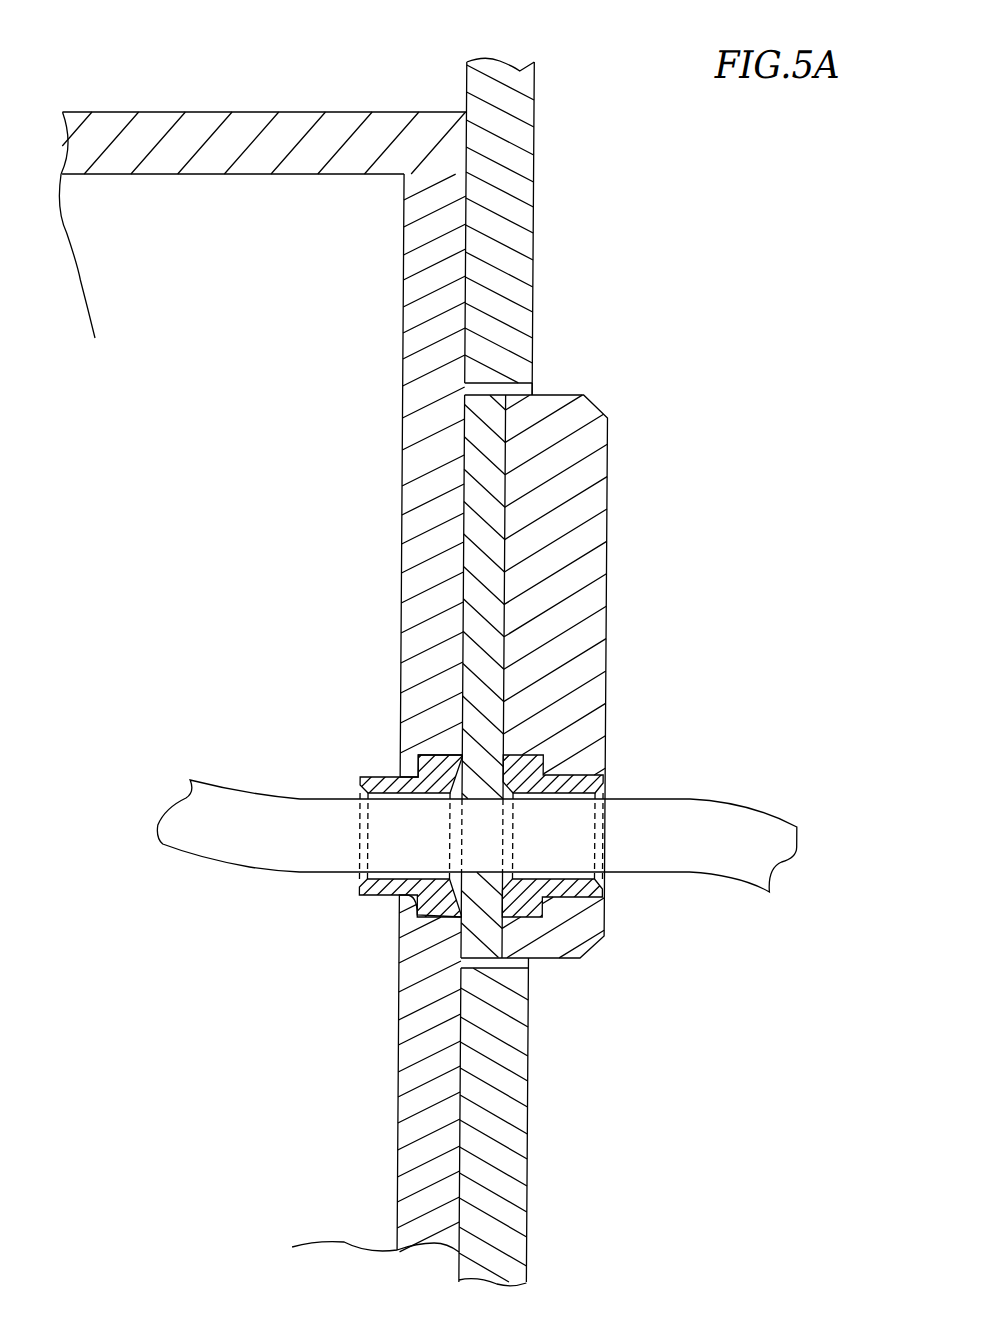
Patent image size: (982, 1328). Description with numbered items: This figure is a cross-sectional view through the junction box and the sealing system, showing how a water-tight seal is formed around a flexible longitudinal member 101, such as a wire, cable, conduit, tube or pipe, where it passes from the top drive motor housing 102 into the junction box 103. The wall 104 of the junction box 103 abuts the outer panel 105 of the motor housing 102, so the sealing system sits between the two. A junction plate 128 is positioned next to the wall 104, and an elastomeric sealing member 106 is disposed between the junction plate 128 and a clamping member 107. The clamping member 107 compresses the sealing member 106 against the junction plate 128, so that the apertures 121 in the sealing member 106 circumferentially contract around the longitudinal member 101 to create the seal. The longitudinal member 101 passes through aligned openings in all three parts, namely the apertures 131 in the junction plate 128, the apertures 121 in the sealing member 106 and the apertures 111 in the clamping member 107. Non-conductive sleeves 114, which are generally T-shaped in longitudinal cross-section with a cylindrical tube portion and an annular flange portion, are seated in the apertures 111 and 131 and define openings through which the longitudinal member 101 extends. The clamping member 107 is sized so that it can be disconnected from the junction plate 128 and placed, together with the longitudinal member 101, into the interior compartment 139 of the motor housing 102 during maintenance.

The flexible longitudinal members 101 is at (692, 818).
The top drive motor housing 102 is at (566, 209).
The junction box 103 is at (250, 95).
The wall 104 is at (368, 713).
The outer panel 105 is at (503, 184).
The sealing member 106 is at (481, 565).
The clamping member 107 is at (550, 503).
The apertures 111 is at (550, 860).
The sleeves 114 is at (417, 773).
The apertures 121 is at (406, 964).
The junction plate 128 is at (428, 460).
The apertures 131 is at (400, 843).
The interior compartment 139 is at (670, 272).